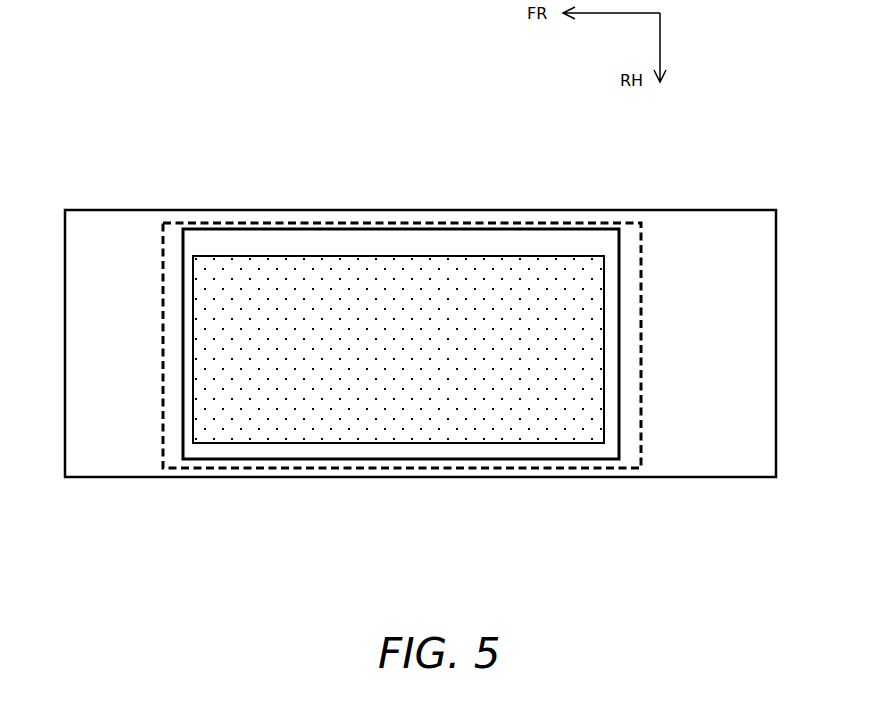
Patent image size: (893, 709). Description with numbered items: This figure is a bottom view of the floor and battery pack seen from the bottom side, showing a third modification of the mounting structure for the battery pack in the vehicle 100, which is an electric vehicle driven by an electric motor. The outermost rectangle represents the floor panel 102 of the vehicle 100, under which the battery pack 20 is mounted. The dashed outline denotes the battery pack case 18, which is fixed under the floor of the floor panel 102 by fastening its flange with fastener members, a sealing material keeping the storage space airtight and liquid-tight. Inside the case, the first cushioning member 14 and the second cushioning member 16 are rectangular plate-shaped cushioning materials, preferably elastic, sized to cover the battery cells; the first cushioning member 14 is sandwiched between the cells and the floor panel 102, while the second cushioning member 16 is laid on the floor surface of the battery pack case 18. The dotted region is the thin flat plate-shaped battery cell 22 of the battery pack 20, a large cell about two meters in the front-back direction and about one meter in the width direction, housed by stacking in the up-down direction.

The vehicle 100 is at (677, 152).
The floor panel 102 is at (299, 210).
The first cushioning member 14 is at (437, 242).
The second cushioning member 16 is at (401, 344).
The battery pack case 18 is at (423, 468).
The battery pack 20 is at (503, 482).
The battery cell 22 is at (216, 288).